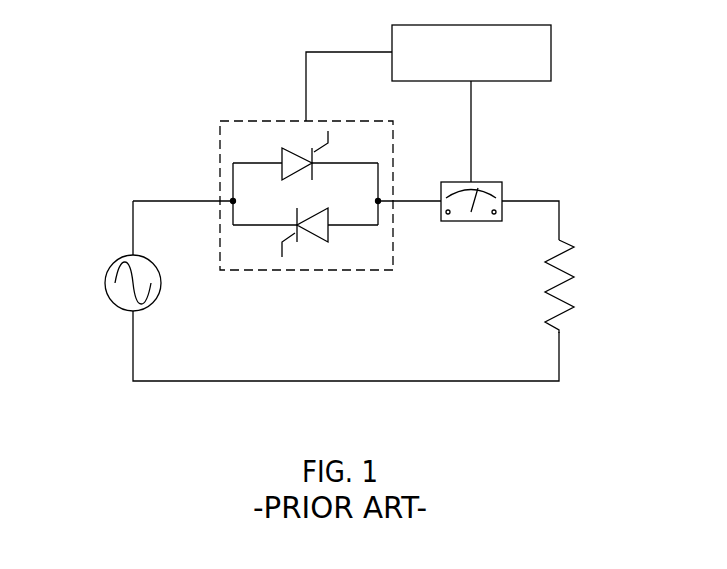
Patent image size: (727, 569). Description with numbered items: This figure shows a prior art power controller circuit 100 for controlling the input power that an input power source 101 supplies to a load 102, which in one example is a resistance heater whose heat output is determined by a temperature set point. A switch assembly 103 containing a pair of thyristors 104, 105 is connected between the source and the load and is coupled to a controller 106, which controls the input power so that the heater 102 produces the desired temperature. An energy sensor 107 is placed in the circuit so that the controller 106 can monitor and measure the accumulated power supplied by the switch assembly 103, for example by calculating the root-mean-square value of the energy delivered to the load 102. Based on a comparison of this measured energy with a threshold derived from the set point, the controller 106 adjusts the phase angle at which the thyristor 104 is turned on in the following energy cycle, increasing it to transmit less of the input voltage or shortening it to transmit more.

The power controller circuit 100 is at (152, 78).
The input power source 101 is at (107, 271).
The load 102 is at (571, 240).
The switch assembly 103 is at (279, 195).
The thyristor 104 is at (298, 156).
The thyristor 105 is at (317, 243).
The controller 106 is at (552, 52).
The energy sensor 107 is at (503, 195).